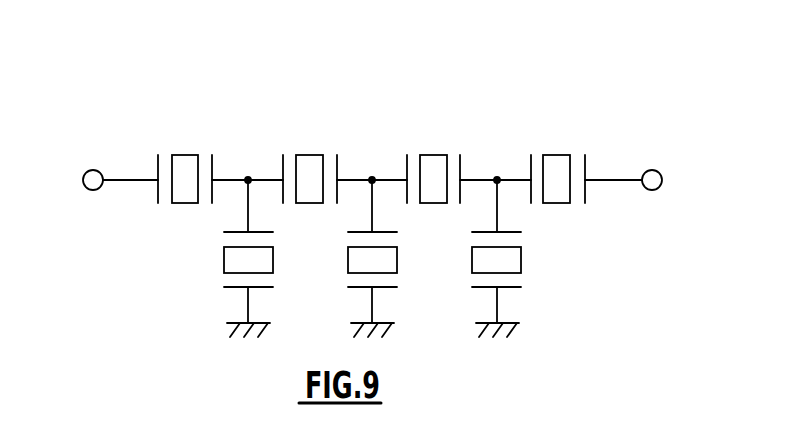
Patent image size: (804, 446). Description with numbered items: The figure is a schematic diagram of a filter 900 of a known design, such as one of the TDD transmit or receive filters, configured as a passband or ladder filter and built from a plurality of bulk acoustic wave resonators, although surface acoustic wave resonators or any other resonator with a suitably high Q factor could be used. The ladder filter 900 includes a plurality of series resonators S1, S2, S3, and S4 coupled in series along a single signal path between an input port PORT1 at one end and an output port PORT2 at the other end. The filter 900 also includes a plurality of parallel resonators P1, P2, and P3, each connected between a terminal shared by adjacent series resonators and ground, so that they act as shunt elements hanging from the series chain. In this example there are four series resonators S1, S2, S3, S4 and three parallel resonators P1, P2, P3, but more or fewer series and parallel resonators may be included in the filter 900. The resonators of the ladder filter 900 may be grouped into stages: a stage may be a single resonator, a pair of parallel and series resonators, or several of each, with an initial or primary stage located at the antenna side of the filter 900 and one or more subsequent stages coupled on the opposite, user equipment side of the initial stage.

The filter 900 is at (442, 72).
The input port PORT1 is at (110, 162).
The output port PORT2 is at (651, 162).
The series resonator S1 is at (220, 162).
The series resonator S2 is at (345, 162).
The series resonator S3 is at (469, 162).
The series resonator S4 is at (586, 162).
The parallel resonator P1 is at (234, 258).
The parallel resonator P2 is at (358, 258).
The parallel resonator P3 is at (480, 258).